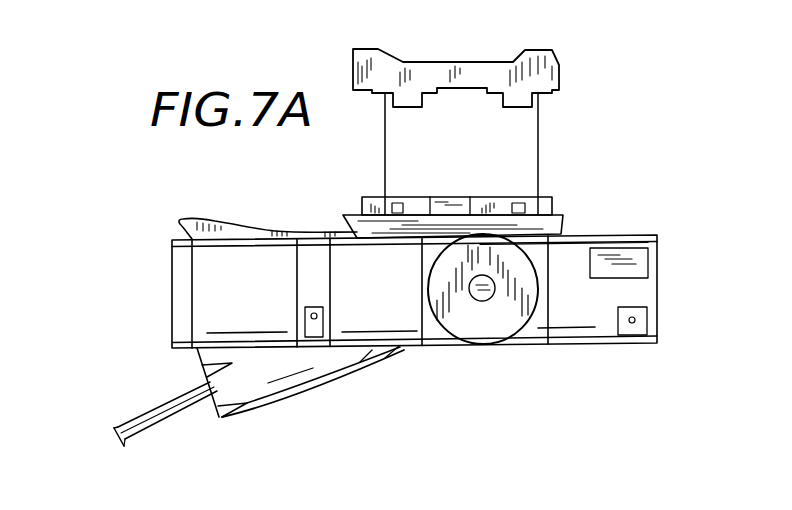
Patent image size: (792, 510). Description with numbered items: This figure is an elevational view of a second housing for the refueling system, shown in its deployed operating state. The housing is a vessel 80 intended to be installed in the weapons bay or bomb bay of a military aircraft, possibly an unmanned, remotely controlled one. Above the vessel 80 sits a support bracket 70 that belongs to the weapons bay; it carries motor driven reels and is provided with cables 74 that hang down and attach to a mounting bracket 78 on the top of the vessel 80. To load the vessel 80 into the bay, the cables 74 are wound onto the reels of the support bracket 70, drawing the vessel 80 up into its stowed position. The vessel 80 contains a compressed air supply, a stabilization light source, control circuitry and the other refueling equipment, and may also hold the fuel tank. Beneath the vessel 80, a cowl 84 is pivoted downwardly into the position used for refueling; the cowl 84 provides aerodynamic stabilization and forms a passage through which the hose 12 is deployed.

The hose 12 is at (140, 420).
The support bracket 70 is at (559, 65).
The cables 74 is at (539, 162).
The mounting bracket 78 is at (563, 215).
The vessel 80 is at (262, 246).
The cowl 84 is at (338, 388).